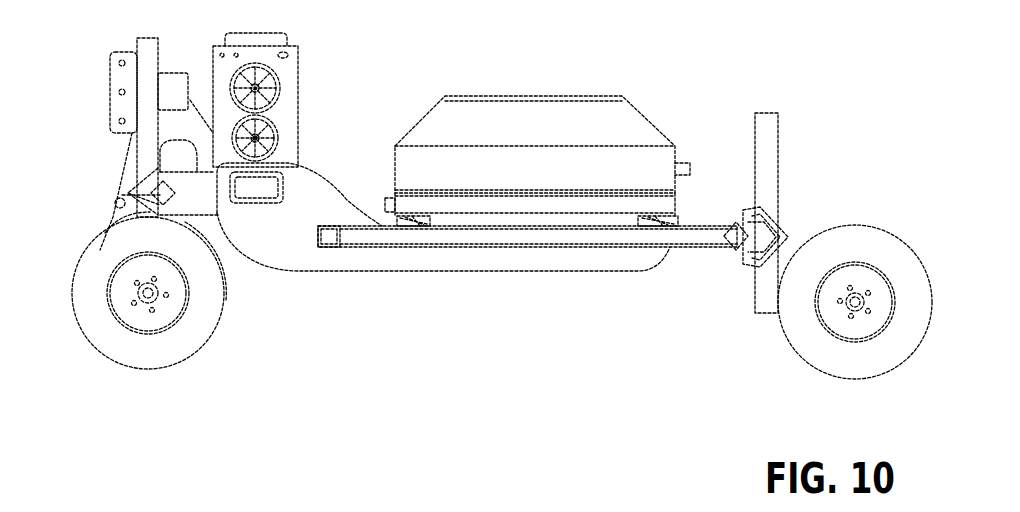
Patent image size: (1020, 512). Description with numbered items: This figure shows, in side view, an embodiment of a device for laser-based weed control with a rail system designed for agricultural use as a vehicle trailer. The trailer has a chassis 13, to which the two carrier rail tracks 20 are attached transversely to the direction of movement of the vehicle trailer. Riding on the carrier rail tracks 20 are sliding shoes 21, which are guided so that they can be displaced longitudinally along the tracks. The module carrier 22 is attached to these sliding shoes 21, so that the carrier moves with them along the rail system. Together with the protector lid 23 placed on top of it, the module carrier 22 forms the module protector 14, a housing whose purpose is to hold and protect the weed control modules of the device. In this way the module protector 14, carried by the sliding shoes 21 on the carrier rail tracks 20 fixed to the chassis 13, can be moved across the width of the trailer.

The chassis 13 is at (365, 255).
The module protector 14 is at (495, 125).
The carrier rail tracks 20 is at (413, 223).
The sliding shoes 21 is at (428, 220).
The module carrier 22 is at (495, 209).
The protector lid 23 is at (493, 170).